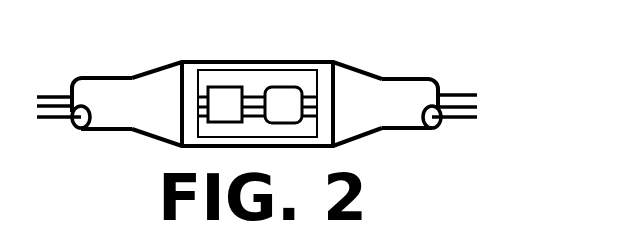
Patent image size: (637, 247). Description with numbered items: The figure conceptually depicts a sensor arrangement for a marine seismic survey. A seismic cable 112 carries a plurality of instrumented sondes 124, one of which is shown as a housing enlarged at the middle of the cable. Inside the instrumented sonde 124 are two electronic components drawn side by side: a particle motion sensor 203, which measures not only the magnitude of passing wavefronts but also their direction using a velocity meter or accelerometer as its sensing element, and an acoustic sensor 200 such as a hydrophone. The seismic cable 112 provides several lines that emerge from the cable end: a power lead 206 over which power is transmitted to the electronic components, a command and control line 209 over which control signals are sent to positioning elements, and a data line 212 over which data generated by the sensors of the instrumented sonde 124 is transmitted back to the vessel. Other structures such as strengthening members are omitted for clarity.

The seismic cable 112 is at (115, 77).
The instrumented sonde 124 is at (180, 62).
The particle motion sensor 203 is at (223, 96).
The acoustic sensor 200 is at (283, 96).
The power lead 206 is at (475, 95).
The command and control line 209 is at (477, 107).
The data line 212 is at (477, 118).